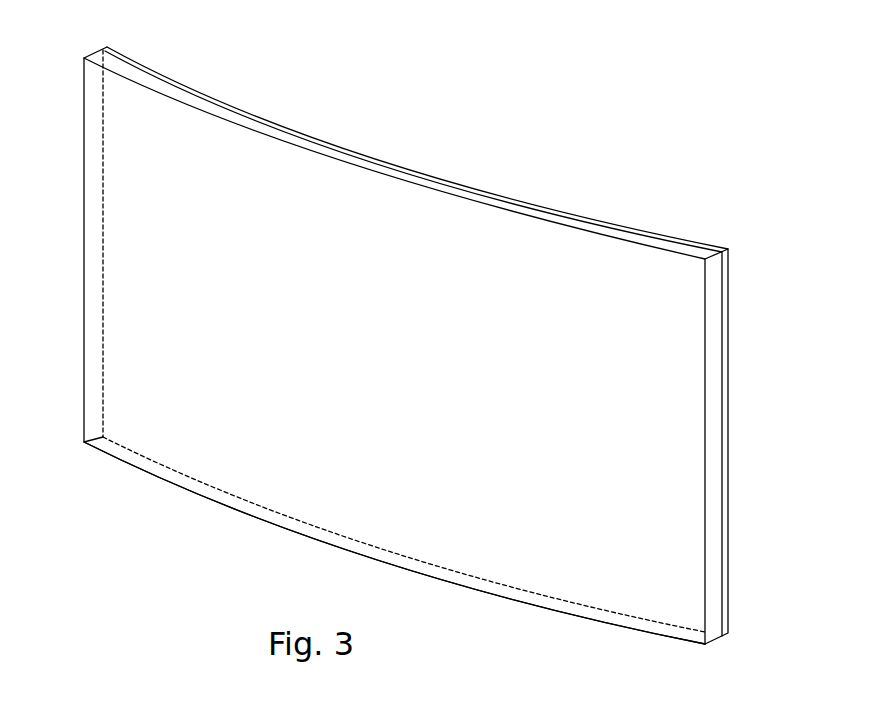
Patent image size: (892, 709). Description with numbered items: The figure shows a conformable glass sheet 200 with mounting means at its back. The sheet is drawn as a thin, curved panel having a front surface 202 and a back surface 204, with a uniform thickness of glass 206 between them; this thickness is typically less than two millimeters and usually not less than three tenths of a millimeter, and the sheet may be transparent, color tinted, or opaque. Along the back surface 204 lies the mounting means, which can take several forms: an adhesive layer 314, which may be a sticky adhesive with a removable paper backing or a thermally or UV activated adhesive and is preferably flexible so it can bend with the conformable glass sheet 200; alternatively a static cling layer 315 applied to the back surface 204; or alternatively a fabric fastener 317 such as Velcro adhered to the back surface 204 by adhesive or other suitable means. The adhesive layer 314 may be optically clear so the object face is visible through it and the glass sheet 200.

The conformable glass sheet 200 is at (402, 172).
The front surface 202 is at (485, 567).
The back surface 204 is at (330, 525).
The thickness of glass 206 is at (100, 52).
The adhesive layer 314 is at (558, 217).
The static cling layer 315 is at (413, 343).
The fabric fastener 317 is at (599, 210).